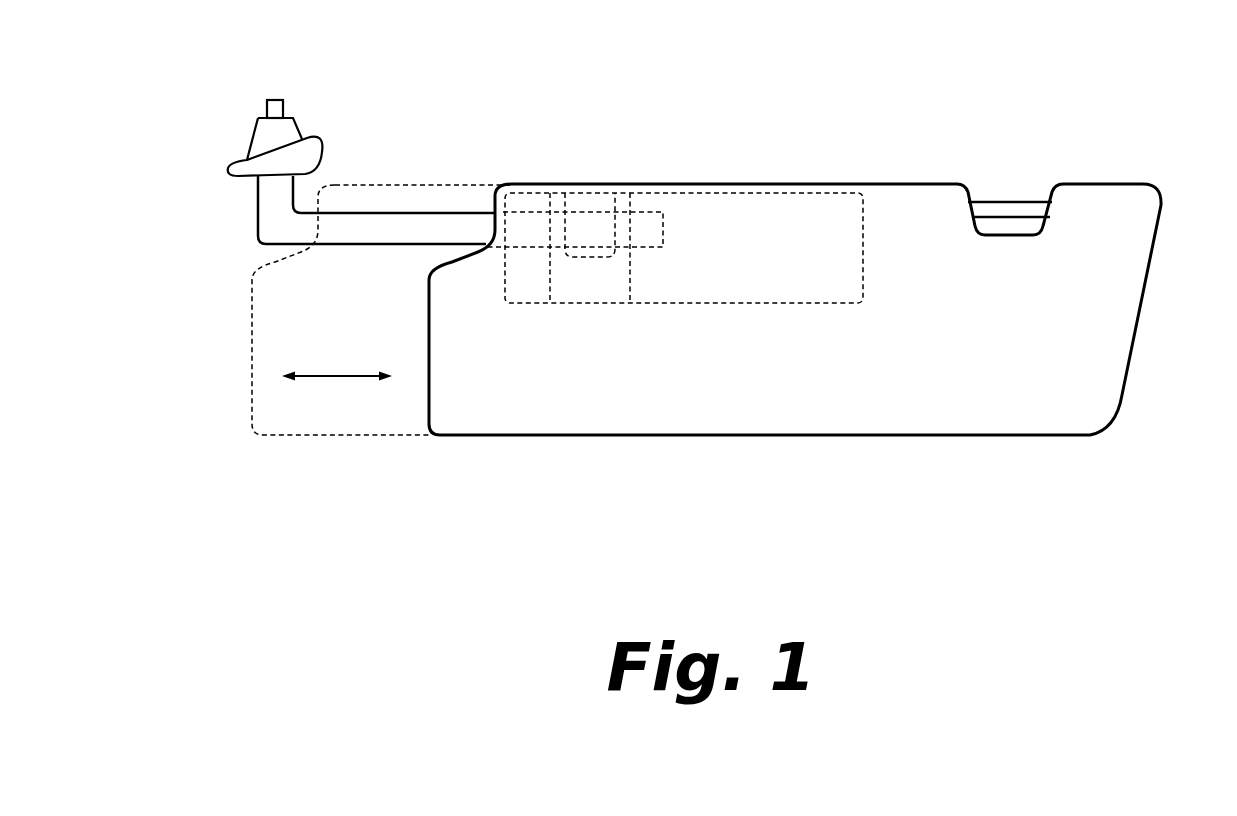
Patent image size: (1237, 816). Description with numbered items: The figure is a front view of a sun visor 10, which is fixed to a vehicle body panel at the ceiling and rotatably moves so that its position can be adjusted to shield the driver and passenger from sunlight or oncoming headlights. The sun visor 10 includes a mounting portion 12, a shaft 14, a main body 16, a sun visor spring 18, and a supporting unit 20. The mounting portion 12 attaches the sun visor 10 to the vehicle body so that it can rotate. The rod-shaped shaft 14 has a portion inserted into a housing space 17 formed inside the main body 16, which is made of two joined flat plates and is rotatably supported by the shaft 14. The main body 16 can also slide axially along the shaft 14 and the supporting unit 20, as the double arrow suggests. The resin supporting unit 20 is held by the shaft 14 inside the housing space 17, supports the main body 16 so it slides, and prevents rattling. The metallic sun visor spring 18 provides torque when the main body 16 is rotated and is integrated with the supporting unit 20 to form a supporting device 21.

The sun visor 10 is at (714, 509).
The mounting portion 12 is at (262, 140).
The shaft 14 is at (412, 225).
The main body 16 is at (1128, 267).
The housing space 17 is at (805, 193).
The sun visor spring 18 is at (577, 200).
The supporting unit 20 is at (623, 280).
The supporting device 21 is at (523, 62).